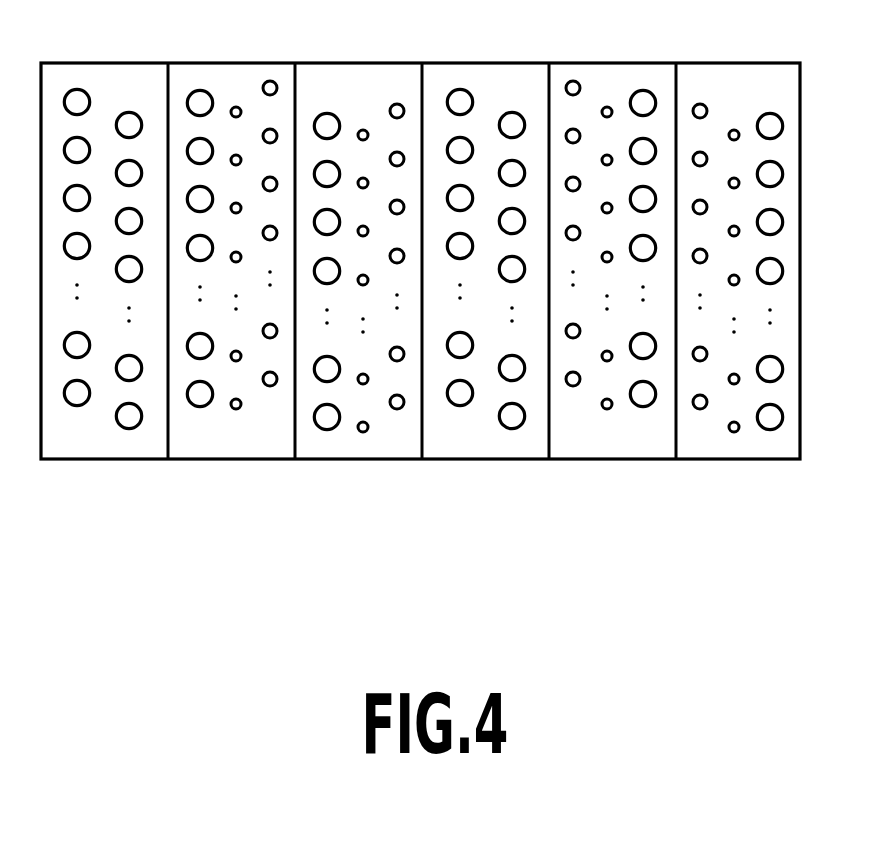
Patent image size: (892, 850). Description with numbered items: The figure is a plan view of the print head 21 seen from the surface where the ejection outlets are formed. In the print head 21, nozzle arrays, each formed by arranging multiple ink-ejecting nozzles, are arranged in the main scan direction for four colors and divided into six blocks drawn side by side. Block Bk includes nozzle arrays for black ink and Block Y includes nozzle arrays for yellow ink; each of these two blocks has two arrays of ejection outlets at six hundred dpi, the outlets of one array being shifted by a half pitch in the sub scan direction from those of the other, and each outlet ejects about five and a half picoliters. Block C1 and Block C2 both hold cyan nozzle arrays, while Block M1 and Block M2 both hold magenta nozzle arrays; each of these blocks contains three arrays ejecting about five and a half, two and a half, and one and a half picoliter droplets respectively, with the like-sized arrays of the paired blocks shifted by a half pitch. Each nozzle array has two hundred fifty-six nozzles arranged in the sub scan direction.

The print head 21 is at (420, 309).
The Block Bk is at (102, 220).
The Block C1 is at (232, 210).
The Block M1 is at (359, 221).
The Block Y is at (485, 220).
The Block M2 is at (611, 210).
The Block C2 is at (738, 221).